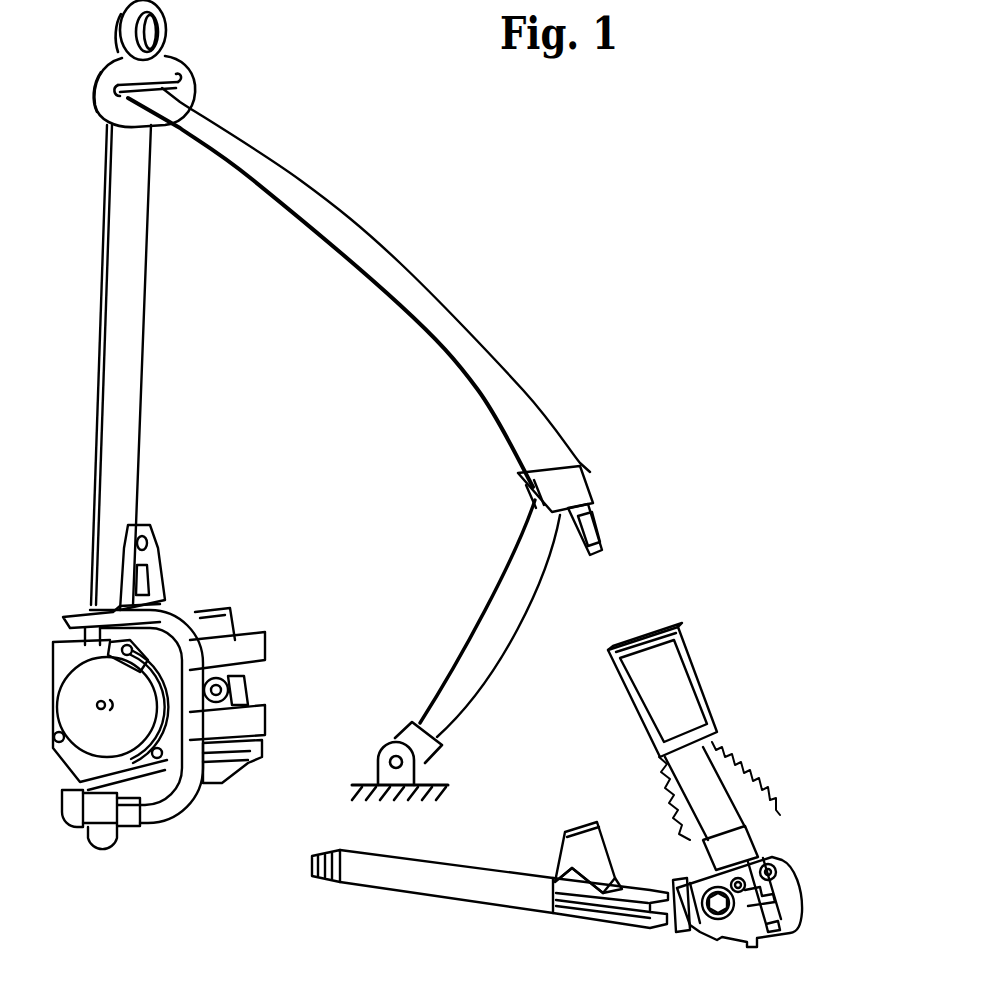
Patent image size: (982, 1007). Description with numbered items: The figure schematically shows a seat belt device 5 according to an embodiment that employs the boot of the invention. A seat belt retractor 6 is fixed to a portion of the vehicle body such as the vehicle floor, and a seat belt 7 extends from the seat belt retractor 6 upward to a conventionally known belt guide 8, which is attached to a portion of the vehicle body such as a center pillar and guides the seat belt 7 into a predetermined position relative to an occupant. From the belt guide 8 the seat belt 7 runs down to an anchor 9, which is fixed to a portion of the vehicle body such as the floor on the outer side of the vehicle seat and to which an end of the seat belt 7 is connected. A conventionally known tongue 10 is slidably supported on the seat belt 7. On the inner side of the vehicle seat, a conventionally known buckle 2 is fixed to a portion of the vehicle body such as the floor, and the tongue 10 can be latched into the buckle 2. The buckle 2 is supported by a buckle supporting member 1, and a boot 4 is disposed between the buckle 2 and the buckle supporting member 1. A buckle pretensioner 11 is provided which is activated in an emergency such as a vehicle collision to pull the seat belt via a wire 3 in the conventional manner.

The buckle supporting member 1 is at (783, 858).
The buckle 2 is at (680, 705).
The wire 3 is at (706, 790).
The boot 4 is at (718, 752).
The seat belt device 5 is at (544, 213).
The seat belt retractor 6 is at (232, 630).
The seat belt 7 is at (125, 410).
The belt guide 8 is at (178, 68).
The anchor 9 is at (380, 757).
The tongue 10 is at (590, 506).
The buckle pretensioner 11 is at (530, 892).